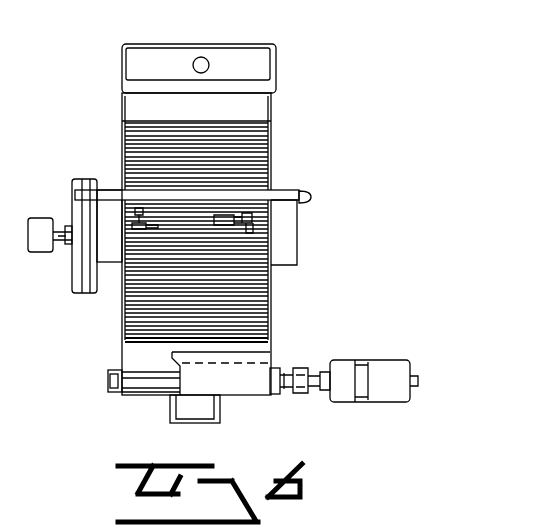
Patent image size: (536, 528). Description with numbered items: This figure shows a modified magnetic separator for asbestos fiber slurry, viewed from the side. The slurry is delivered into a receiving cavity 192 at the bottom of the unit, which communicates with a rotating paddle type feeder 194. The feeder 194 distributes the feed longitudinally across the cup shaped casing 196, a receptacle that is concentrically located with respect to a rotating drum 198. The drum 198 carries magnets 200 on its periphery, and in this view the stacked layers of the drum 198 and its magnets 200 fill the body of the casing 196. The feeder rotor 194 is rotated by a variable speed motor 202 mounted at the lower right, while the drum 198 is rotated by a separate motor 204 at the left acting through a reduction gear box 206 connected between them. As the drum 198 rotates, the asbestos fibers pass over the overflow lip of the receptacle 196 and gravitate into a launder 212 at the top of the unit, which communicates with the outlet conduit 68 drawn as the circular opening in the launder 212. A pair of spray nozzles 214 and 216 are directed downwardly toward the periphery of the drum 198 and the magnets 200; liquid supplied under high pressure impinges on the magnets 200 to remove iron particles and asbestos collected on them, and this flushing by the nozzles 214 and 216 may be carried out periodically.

The outlet conduit 68 is at (209, 58).
The receiving cavity 192 is at (208, 413).
The rotating paddle type feeder 194 is at (148, 379).
The cup shaped casing 196 is at (270, 318).
The rotating drum 198 is at (268, 286).
The magnets 200 is at (272, 273).
The variable speed motor 202 is at (386, 375).
The motor 204 is at (53, 222).
The reduction gear box 206 is at (87, 179).
The launder 212 is at (167, 45).
The spray nozzle 214 is at (148, 214).
The spray nozzle 216 is at (236, 222).